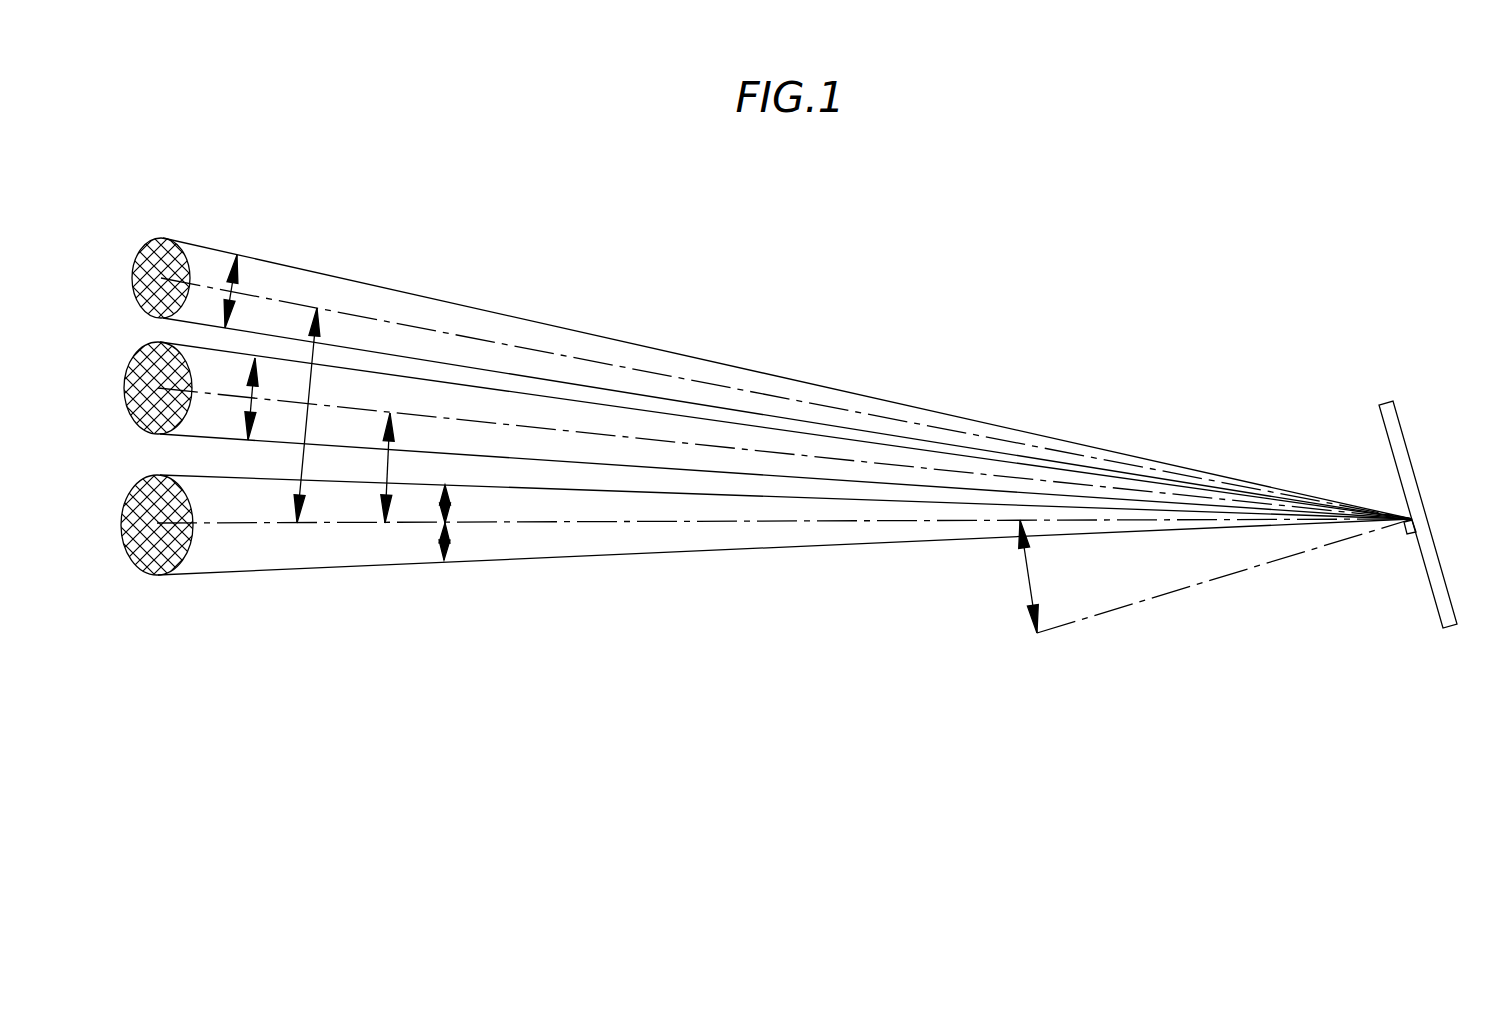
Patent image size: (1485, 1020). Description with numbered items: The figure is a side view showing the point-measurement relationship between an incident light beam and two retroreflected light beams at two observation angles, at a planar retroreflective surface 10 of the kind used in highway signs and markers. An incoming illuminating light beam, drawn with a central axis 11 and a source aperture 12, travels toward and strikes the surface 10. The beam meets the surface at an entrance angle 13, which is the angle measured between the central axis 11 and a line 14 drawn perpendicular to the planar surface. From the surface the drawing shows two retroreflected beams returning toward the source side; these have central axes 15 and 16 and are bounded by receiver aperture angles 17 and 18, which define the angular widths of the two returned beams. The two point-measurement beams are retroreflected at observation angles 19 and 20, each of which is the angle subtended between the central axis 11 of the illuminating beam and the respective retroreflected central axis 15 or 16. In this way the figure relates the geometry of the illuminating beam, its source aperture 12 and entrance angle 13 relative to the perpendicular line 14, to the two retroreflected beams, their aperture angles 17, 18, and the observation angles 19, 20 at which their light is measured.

The planar retroreflective surface 10 is at (1402, 430).
The central axis of illuminating light beam 11 is at (563, 524).
The source aperture 12 is at (443, 529).
The entrance angle 13 is at (1020, 578).
The line perpendicular to the planar surface 14 is at (1125, 606).
The central axis of first retroreflected beam 15 is at (503, 422).
The central axis of second retroreflected beam 16 is at (398, 322).
The receiver aperture angle 17 is at (252, 392).
The receiver aperture angle 18 is at (238, 287).
The observation angle 19 is at (385, 469).
The observation angle 20 is at (308, 378).